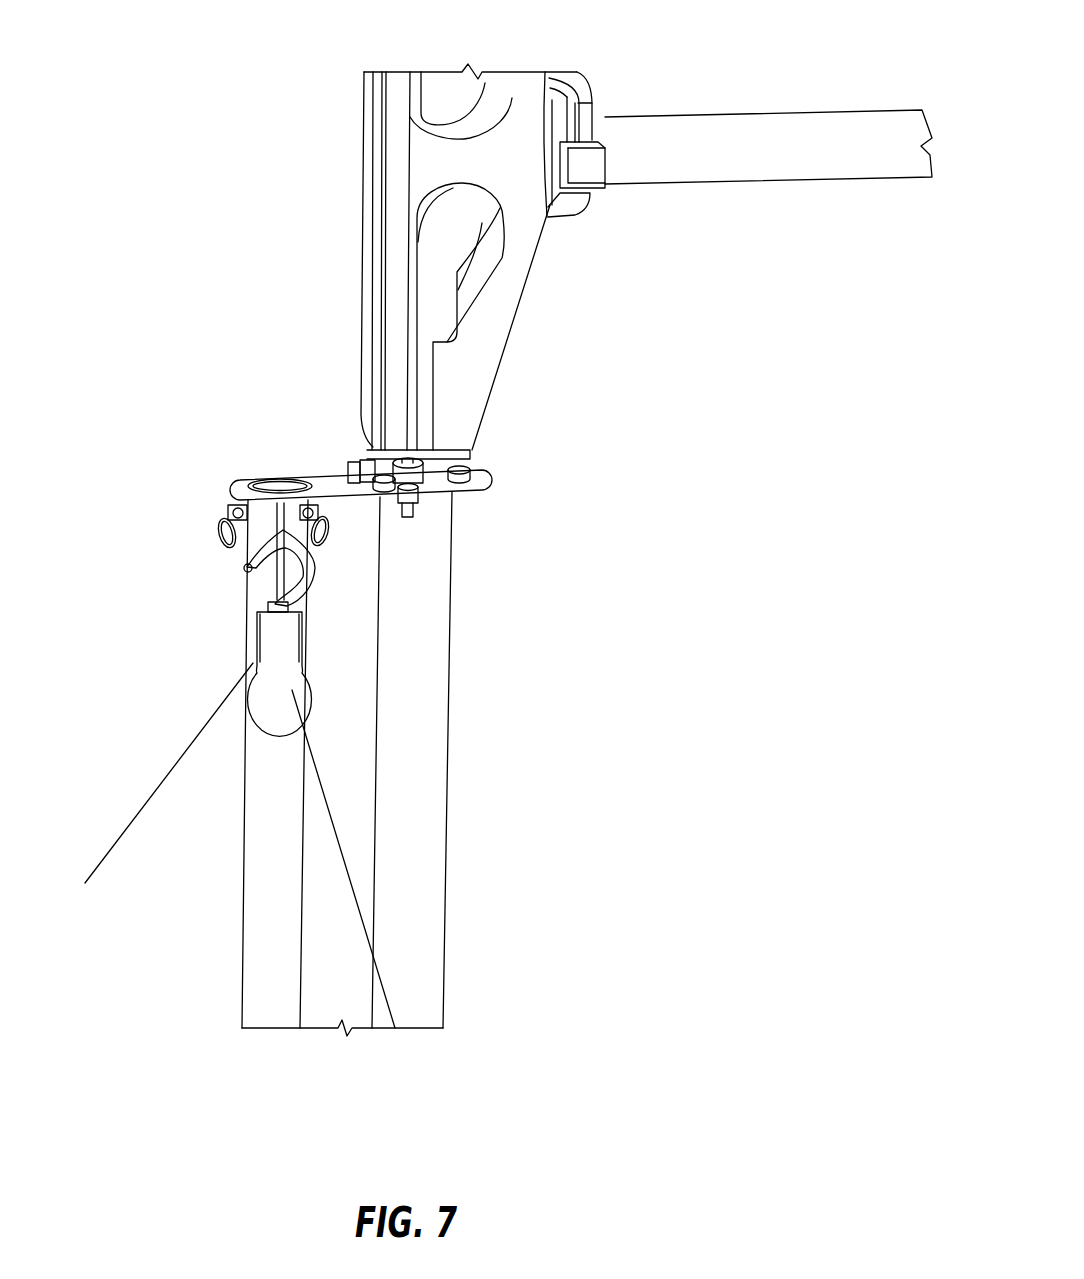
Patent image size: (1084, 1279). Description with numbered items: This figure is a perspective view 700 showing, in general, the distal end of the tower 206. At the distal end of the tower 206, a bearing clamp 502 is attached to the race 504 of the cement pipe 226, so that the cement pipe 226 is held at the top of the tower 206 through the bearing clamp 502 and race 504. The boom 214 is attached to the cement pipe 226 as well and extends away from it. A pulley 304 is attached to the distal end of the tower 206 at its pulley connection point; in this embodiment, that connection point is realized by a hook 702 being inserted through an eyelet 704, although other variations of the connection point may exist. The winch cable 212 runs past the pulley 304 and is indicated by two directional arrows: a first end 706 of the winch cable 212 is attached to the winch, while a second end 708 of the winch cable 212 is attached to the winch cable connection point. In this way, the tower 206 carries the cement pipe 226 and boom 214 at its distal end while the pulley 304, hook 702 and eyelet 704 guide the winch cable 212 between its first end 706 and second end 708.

The perspective view 700 is at (193, 52).
The boom 214 is at (678, 168).
The bearing clamp 502 is at (370, 447).
The race 504 is at (437, 497).
The eyelet 704 is at (230, 497).
The hook 702 is at (250, 568).
The pulley 304 is at (275, 697).
The cement pipe 226 is at (430, 697).
The winch cable 212 is at (197, 728).
The tower 206 is at (245, 868).
The first end of the winch cable 706 is at (78, 893).
The second end of the winch cable 708 is at (398, 1038).